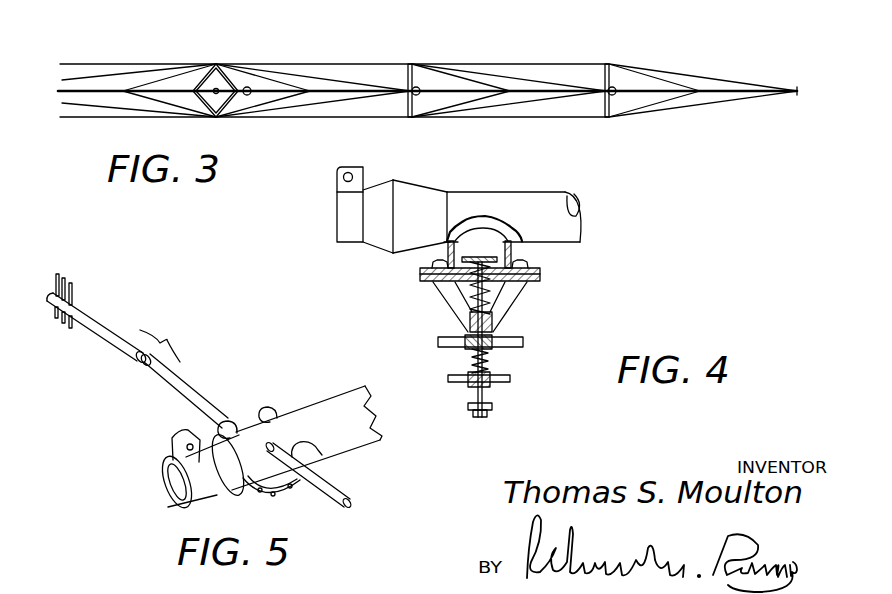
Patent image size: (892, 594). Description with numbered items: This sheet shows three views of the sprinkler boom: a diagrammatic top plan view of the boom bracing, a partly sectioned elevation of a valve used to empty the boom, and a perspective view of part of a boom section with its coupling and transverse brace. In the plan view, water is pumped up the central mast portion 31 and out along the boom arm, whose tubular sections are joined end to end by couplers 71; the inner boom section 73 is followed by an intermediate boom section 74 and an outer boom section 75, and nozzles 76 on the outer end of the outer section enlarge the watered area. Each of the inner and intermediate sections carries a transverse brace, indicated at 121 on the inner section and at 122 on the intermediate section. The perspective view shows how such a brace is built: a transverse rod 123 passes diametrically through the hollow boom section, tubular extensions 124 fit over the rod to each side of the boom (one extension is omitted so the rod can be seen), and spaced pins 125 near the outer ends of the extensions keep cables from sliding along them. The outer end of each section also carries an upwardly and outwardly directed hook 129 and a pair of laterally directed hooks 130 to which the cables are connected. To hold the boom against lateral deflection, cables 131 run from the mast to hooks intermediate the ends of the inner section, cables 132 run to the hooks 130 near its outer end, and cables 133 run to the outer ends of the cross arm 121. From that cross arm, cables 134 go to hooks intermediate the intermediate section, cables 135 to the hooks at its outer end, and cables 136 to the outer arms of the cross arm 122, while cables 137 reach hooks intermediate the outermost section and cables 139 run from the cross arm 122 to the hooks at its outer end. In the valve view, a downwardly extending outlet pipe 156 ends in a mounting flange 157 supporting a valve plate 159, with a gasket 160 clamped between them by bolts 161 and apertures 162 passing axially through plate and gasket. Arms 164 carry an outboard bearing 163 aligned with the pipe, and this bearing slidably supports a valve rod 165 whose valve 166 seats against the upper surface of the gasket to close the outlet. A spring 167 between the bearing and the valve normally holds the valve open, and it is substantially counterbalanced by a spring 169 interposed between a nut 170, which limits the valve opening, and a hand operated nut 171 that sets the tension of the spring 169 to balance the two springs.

In FIG. 3, the mast portion 31 is at (212, 96).
In FIG. 3, the coupler 71 is at (248, 86).
In FIG. 3, the inner boom section 73 is at (322, 90).
In FIG. 5, the inner boom section 73 is at (337, 408).
In FIG. 3, the intermediate boom section 74 is at (516, 91).
In FIG. 3, the outer boom section 75 is at (673, 91).
In FIG. 3, the nozzle 76 is at (793, 90).
In FIG. 3, the transverse brace 121 is at (401, 69).
In FIG. 5, the transverse brace 121 is at (194, 375).
In FIG. 3, the transverse brace 122 is at (605, 80).
In FIG. 5, the transverse rod 123 is at (327, 487).
In FIG. 5, the tubular extension 124 is at (108, 330).
In FIG. 5, the spaced pins 125 is at (60, 274).
In FIG. 5, the hook 129 is at (226, 421).
In FIG. 5, the hooks 130 is at (263, 410).
In FIG. 3, the cables 131 is at (270, 78).
In FIG. 3, the cables 132 is at (349, 82).
In FIG. 3, the cables 133 is at (370, 63).
In FIG. 3, the cables 134 is at (458, 107).
In FIG. 3, the cables 135 is at (540, 103).
In FIG. 3, the cables 136 is at (562, 68).
In FIG. 3, the cables 137 is at (647, 110).
In FIG. 3, the cables 139 is at (717, 83).
In FIG. 4, the outlet pipe 156 is at (512, 250).
In FIG. 4, the mounting flange 157 is at (540, 267).
In FIG. 5, the mounting flange 157 is at (297, 490).
In FIG. 4, the valve plate 159 is at (512, 292).
In FIG. 4, the gasket 160 is at (423, 282).
In FIG. 4, the bolts 161 is at (440, 257).
In FIG. 4, the apertures 162 is at (457, 310).
In FIG. 4, the outboard bearing 163 is at (493, 323).
In FIG. 4, the arms 164 is at (457, 313).
In FIG. 4, the valve rod 165 is at (484, 258).
In FIG. 4, the valve 166 is at (474, 257).
In FIG. 4, the spring 167 is at (506, 243).
In FIG. 4, the spring 169 is at (489, 353).
In FIG. 4, the nut 170 is at (470, 348).
In FIG. 4, the hand operated nut 171 is at (488, 388).